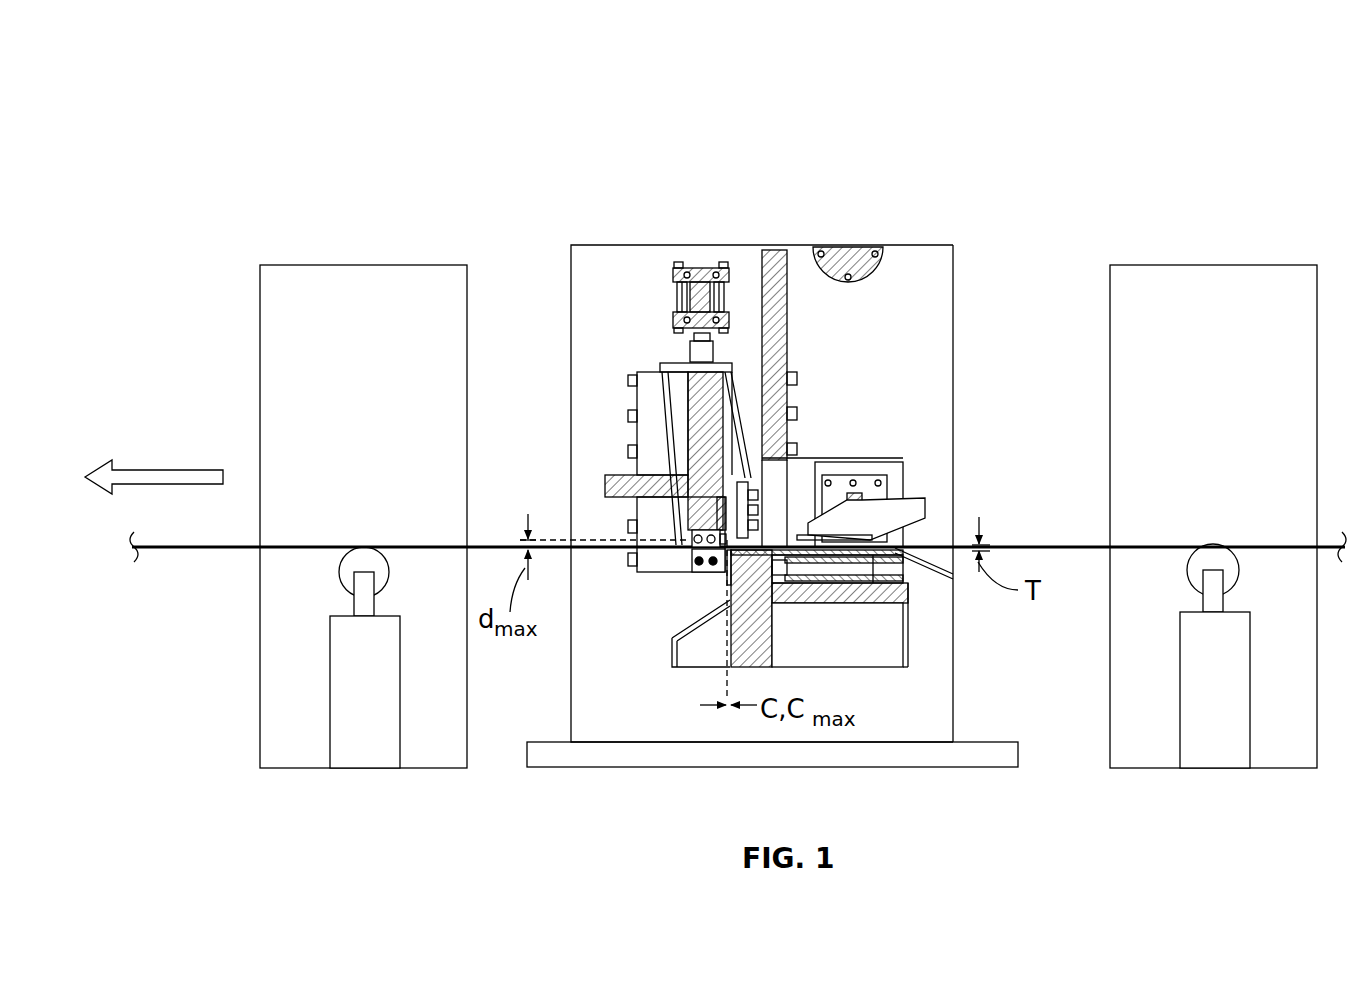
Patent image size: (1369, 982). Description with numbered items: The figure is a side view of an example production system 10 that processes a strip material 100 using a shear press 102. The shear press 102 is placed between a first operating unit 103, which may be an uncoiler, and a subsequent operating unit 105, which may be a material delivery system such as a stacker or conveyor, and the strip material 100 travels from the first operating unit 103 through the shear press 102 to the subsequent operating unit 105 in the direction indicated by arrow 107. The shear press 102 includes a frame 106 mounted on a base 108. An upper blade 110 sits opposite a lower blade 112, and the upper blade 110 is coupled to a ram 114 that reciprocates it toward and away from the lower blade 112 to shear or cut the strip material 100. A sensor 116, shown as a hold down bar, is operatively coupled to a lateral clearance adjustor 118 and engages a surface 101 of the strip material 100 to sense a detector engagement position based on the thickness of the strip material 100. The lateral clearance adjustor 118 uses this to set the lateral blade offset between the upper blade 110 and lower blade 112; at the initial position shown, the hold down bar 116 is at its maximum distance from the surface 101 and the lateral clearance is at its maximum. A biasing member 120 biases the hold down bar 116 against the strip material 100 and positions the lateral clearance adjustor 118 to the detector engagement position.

The production system 10 is at (150, 133).
The strip material 100 is at (237, 556).
The surface of the strip material 101 is at (432, 545).
The shear press 102 is at (645, 232).
The first operating unit 103 is at (1160, 248).
The subsequent operating unit 105 is at (308, 252).
The frame 106 is at (953, 432).
The arrow 107 is at (140, 467).
The base 108 is at (945, 770).
The upper blade 110 is at (690, 523).
The lower blade 112 is at (735, 578).
The ram 114 is at (703, 418).
The sensor 116 is at (757, 488).
The lateral clearance adjustor 118 is at (662, 345).
The biasing member 120 is at (700, 268).